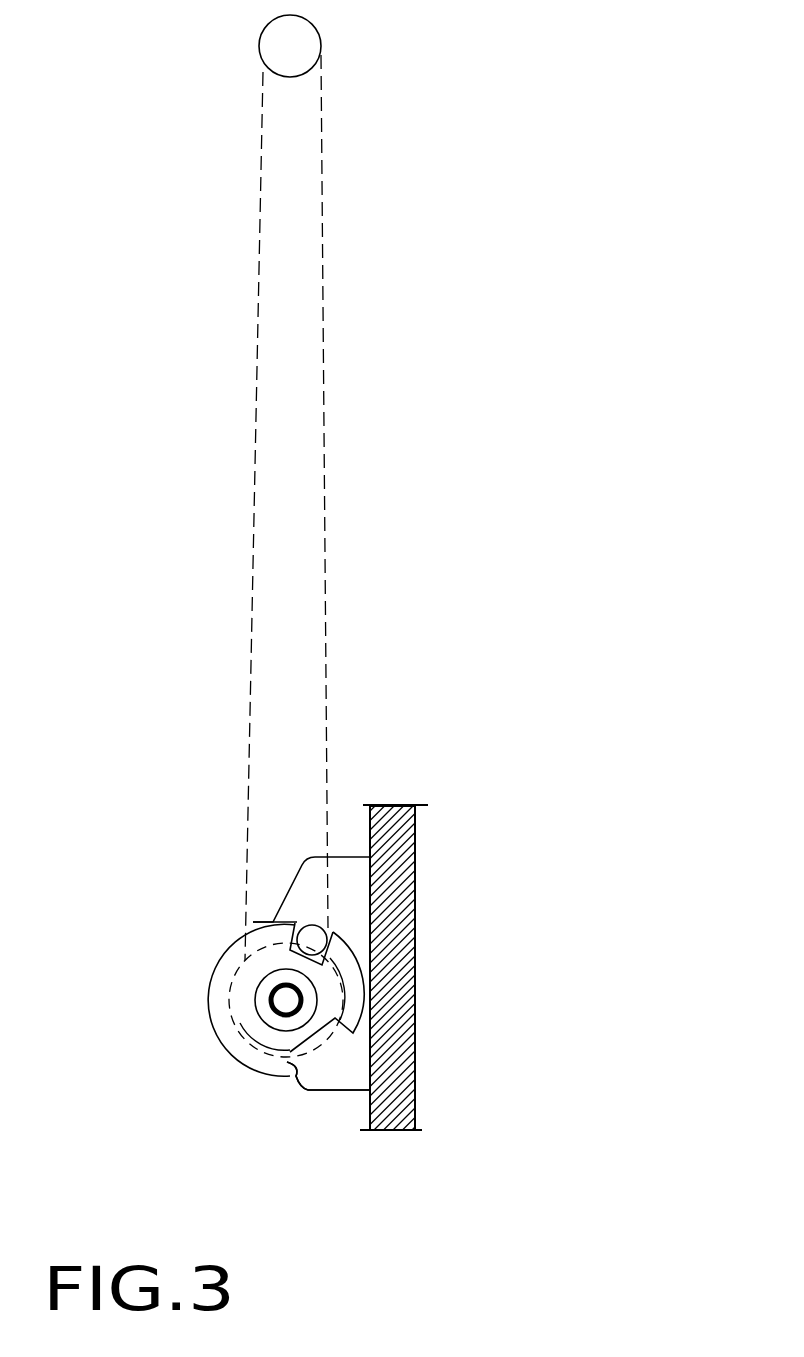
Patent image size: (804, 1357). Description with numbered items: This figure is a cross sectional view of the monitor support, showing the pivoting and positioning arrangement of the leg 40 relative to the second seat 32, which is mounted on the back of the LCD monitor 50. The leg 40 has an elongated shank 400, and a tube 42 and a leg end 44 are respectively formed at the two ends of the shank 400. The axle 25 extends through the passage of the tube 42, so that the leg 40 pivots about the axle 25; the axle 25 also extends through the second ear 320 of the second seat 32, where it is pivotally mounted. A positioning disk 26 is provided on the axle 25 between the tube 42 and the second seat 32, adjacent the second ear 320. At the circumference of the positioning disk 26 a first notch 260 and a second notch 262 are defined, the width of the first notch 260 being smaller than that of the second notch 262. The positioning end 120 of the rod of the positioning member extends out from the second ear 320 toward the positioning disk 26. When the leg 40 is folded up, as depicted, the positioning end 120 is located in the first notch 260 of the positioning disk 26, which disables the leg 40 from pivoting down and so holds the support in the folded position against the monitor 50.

The leg 44 is at (314, 30).
The shank 400 is at (257, 430).
The leg 40 is at (363, 418).
The LCD monitor 50 is at (415, 845).
The second seat 32 is at (312, 1098).
The second ear 320 is at (343, 1090).
The positioning disk 26 is at (210, 1008).
The tube 42 is at (233, 970).
The axle 25 is at (235, 1052).
The positioning end 120 is at (330, 936).
The first notch 260 is at (300, 925).
The second notch 262 is at (300, 1085).